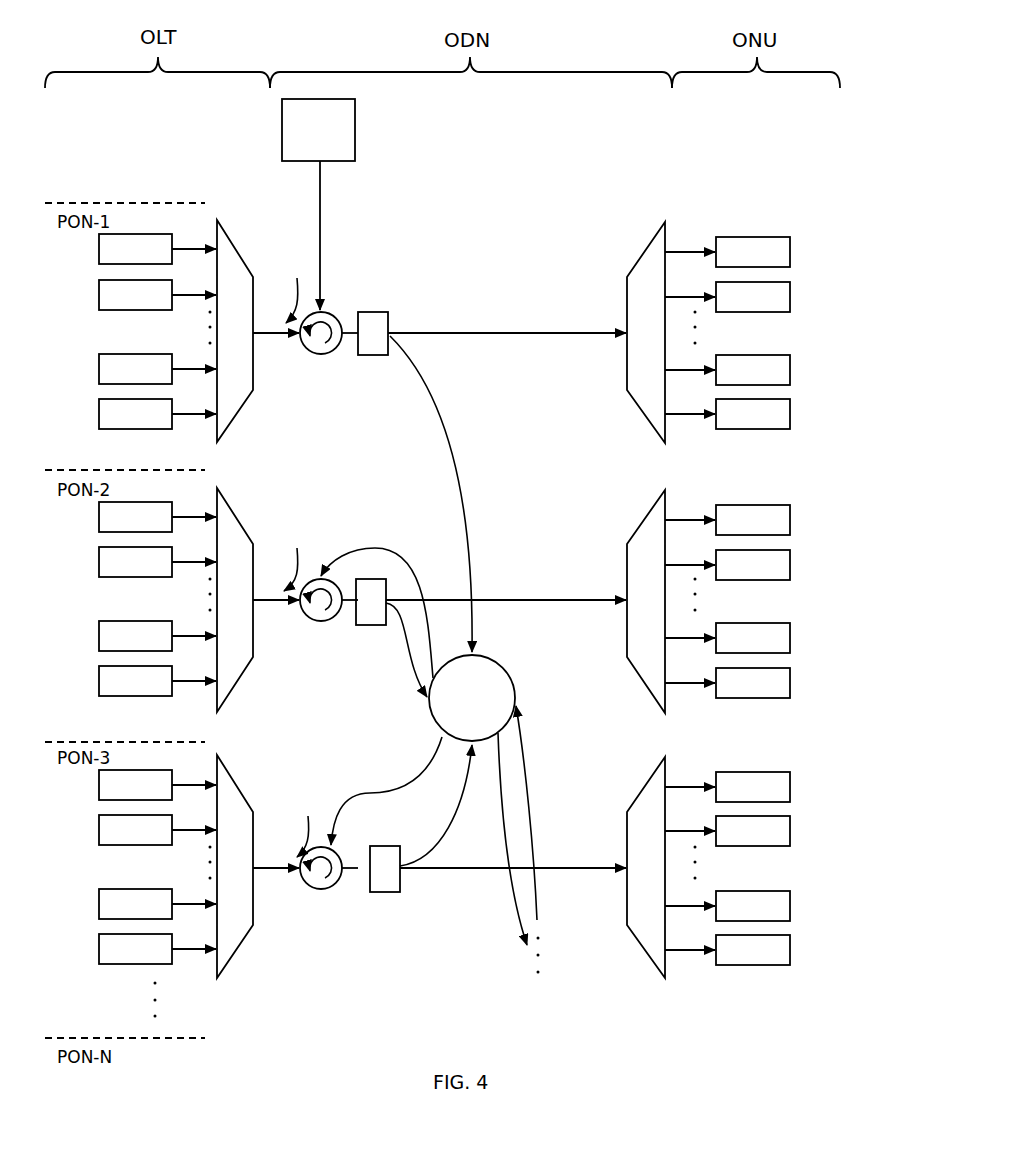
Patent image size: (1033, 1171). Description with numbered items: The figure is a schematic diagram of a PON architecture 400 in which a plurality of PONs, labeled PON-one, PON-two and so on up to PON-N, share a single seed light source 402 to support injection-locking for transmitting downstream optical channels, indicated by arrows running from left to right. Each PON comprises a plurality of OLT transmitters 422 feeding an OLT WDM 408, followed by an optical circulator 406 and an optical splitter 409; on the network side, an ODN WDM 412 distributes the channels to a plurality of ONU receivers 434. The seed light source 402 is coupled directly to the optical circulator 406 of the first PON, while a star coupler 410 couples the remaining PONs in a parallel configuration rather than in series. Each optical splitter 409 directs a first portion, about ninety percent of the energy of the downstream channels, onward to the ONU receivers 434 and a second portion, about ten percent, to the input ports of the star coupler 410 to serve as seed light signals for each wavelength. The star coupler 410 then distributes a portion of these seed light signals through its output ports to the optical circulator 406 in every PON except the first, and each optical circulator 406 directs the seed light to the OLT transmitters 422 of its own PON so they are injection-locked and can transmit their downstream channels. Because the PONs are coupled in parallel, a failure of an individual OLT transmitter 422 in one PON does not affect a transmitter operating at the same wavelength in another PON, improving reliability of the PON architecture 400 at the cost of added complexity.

The PON architecture 400 is at (660, 1042).
The seed light source 402 is at (357, 128).
The optical circulator 406 is at (332, 311).
The OLT WDM 408 is at (230, 238).
The optical splitter 409 is at (389, 318).
The star coupler 410 is at (505, 673).
The ODN WDM 412 is at (641, 250).
The OLT transmitter 422 is at (90, 249).
The ONU receiver 434 is at (790, 252).